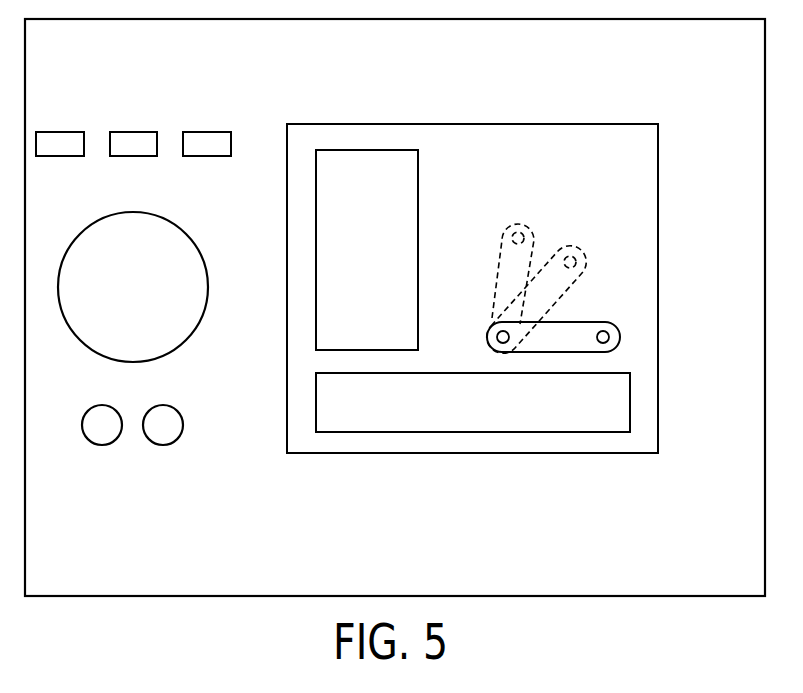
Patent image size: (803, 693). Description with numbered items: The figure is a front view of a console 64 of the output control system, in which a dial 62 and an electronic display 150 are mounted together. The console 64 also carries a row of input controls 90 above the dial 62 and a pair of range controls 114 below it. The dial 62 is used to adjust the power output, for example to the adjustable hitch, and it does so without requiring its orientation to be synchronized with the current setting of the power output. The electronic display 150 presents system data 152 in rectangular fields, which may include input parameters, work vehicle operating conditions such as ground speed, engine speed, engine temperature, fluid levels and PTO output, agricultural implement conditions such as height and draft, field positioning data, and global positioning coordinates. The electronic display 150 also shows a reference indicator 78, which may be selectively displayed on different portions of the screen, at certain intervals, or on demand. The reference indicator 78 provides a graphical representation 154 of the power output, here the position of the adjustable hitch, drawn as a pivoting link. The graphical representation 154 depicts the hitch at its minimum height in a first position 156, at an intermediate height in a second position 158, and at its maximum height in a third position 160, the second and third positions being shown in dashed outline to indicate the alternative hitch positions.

The dial 62 is at (146, 300).
The console 64 is at (659, 287).
The reference indicator 78 is at (573, 179).
The input controls 90 is at (210, 132).
The range controls 114 is at (167, 445).
The electronic display 150 is at (472, 124).
The system data 152 is at (418, 200).
The graphical representation 154 is at (565, 273).
The first position 156 is at (608, 320).
The second position 158 is at (550, 256).
The third position 160 is at (495, 283).